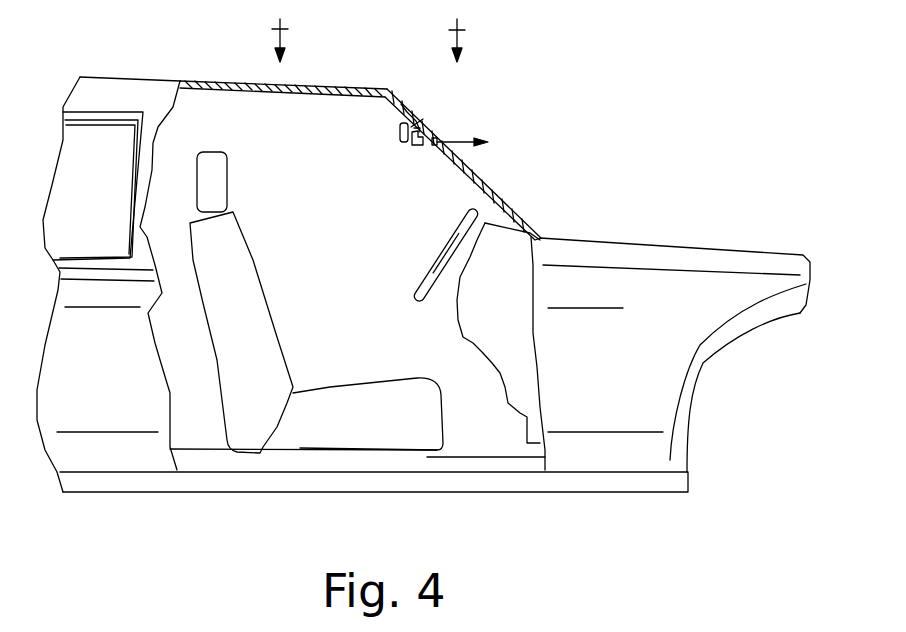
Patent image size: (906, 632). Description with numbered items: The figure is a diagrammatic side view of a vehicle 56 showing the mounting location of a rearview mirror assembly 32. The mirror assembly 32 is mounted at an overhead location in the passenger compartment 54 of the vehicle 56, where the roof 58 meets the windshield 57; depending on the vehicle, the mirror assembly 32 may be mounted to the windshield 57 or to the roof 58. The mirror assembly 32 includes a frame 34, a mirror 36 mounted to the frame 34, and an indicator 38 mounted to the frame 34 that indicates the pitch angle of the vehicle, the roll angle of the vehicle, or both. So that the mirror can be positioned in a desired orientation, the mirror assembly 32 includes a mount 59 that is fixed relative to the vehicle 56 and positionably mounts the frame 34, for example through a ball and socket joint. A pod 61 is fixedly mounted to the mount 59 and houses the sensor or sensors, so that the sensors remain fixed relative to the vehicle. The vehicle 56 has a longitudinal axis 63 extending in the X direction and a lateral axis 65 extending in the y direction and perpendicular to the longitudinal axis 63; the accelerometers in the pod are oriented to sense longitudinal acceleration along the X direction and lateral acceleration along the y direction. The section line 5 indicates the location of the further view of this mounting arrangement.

The section line 5 is at (368, 31).
The mirror assembly 32 is at (390, 157).
The frame 34 is at (412, 147).
The mirror 36 is at (399, 128).
The indicator 38 is at (400, 141).
The passenger compartment 54 is at (285, 180).
The vehicle 56 is at (587, 184).
The windshield 57 is at (498, 192).
The roof 58 is at (337, 94).
The mount 59 is at (402, 102).
The pod 61 is at (425, 147).
The longitudinal axis 63 is at (476, 146).
The lateral axis 65 is at (437, 144).
The X direction X is at (465, 141).
The Y direction y is at (435, 147).